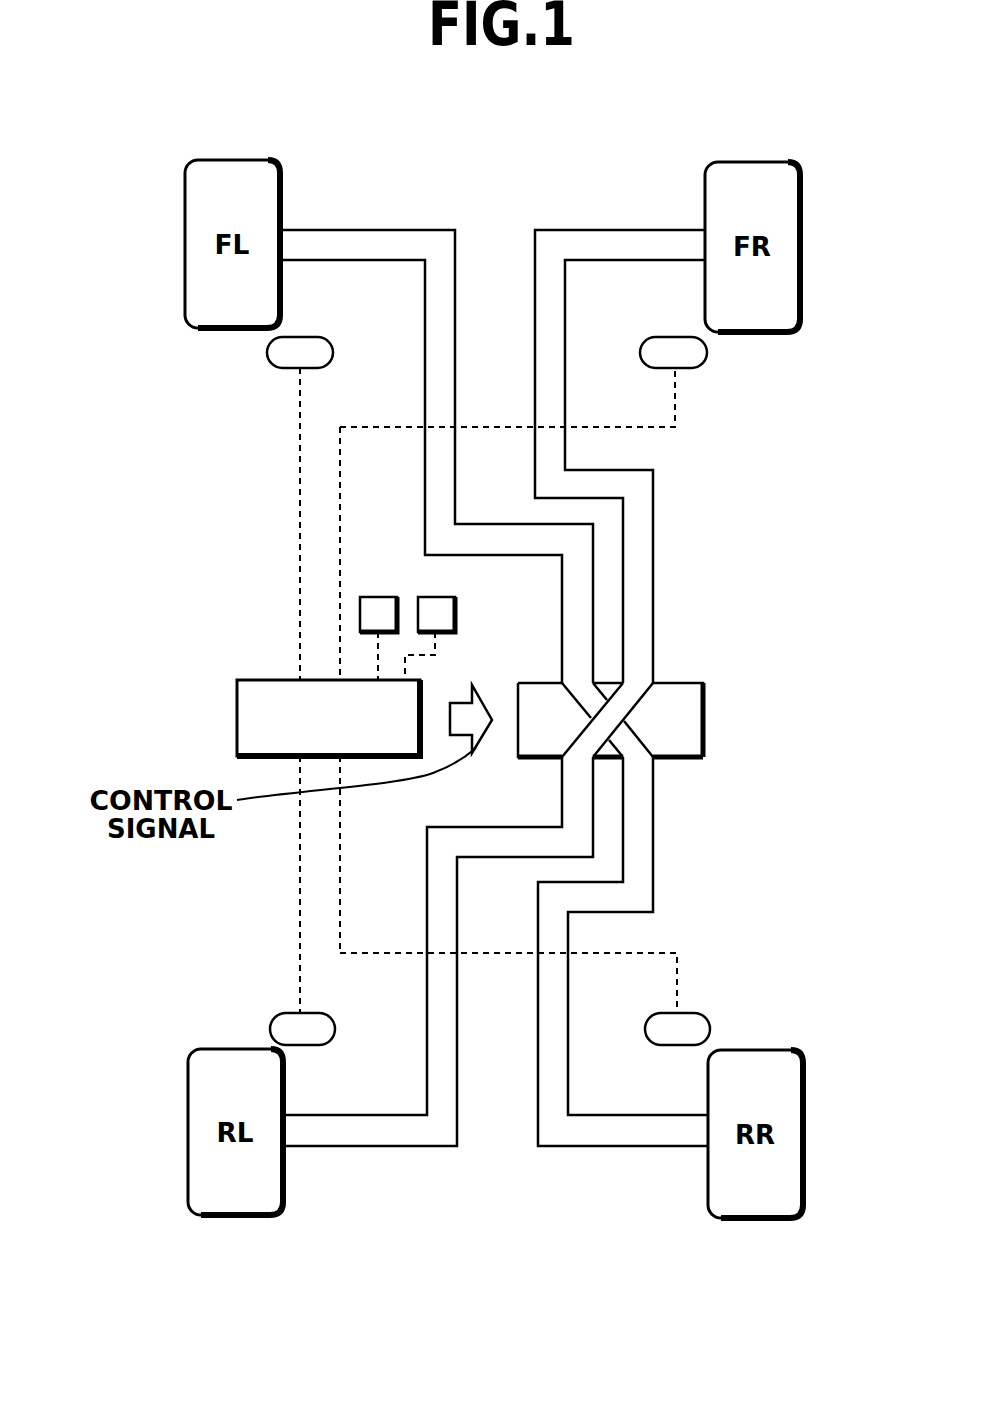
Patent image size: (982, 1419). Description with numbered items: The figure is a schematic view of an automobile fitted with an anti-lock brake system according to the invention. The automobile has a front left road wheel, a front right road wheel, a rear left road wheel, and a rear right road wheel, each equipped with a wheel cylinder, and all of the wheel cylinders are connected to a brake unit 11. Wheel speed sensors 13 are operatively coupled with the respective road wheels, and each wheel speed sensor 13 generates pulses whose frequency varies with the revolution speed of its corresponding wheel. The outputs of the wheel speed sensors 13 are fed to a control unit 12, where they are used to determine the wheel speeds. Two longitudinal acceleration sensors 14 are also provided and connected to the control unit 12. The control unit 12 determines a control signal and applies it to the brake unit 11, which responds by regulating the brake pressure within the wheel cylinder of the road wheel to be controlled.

The brake unit 11 is at (705, 717).
The control unit 12 is at (237, 725).
The wheel speed sensors 13 is at (283, 368).
The longitudinal acceleration sensors 14 is at (437, 597).